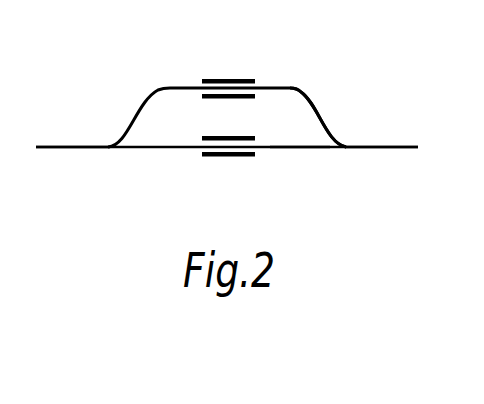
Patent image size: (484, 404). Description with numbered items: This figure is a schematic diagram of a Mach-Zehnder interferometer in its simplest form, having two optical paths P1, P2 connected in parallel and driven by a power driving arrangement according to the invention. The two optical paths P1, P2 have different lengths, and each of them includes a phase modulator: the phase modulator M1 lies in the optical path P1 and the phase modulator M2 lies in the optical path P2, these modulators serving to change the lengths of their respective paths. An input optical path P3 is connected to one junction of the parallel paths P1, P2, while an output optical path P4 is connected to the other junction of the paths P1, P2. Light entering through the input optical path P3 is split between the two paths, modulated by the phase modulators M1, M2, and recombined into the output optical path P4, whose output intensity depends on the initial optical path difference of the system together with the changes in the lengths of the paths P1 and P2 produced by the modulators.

The phase modulator M1 is at (212, 168).
The phase modulator M2 is at (236, 57).
The optical path P1 is at (298, 168).
The optical path P2 is at (320, 94).
The input optical path P3 is at (90, 135).
The output optical path P4 is at (369, 132).